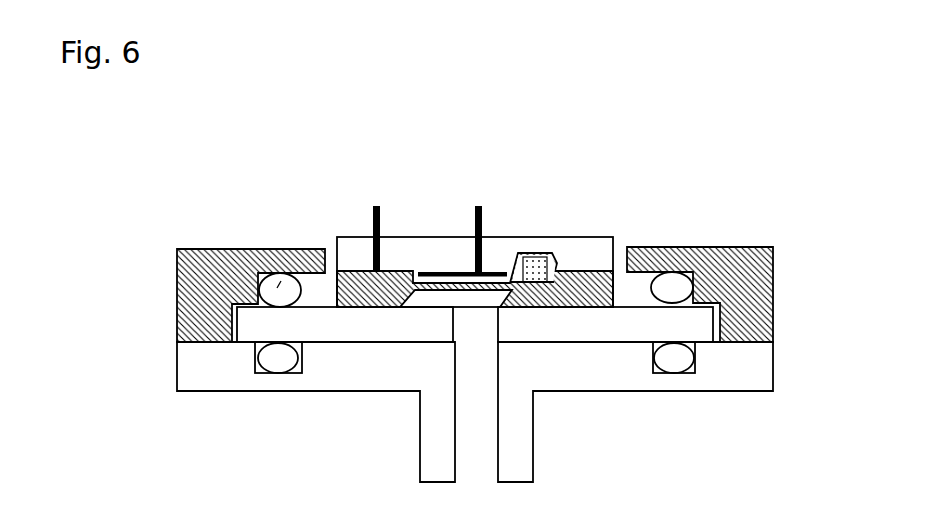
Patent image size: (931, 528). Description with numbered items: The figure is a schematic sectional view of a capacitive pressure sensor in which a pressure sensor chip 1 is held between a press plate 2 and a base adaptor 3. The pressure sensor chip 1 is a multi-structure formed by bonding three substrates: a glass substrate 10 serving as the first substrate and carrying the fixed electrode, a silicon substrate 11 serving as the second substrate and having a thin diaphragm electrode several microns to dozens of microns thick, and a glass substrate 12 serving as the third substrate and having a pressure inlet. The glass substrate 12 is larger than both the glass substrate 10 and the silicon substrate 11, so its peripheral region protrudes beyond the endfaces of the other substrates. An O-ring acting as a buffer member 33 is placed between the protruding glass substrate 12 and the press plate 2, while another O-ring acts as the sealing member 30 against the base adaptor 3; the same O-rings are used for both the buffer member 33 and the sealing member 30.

The pressure sensor chip 1 is at (662, 108).
The press plate 2 is at (213, 249).
The base adaptor 3 is at (188, 369).
The glass substrate (first substrate) 10 is at (517, 243).
The silicon substrate (second substrate) 11 is at (567, 259).
The glass substrate (third substrate) 12 is at (567, 320).
The O-ring (sealing member) 30 is at (268, 355).
The buffer member 33 is at (278, 249).